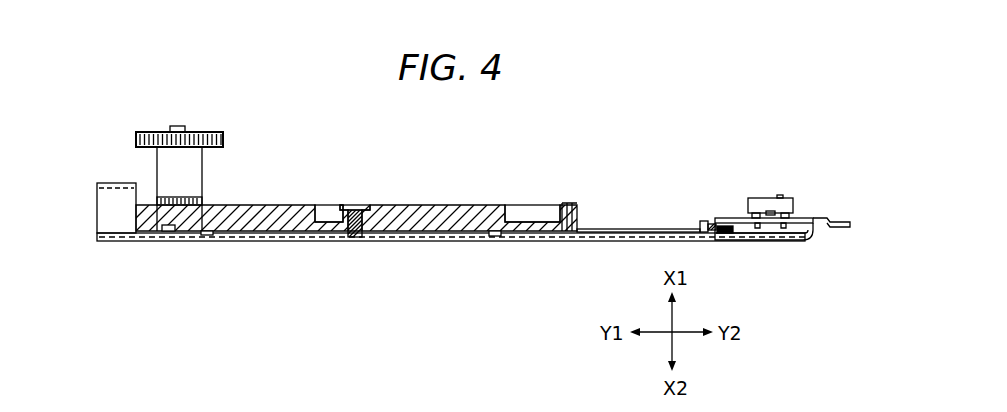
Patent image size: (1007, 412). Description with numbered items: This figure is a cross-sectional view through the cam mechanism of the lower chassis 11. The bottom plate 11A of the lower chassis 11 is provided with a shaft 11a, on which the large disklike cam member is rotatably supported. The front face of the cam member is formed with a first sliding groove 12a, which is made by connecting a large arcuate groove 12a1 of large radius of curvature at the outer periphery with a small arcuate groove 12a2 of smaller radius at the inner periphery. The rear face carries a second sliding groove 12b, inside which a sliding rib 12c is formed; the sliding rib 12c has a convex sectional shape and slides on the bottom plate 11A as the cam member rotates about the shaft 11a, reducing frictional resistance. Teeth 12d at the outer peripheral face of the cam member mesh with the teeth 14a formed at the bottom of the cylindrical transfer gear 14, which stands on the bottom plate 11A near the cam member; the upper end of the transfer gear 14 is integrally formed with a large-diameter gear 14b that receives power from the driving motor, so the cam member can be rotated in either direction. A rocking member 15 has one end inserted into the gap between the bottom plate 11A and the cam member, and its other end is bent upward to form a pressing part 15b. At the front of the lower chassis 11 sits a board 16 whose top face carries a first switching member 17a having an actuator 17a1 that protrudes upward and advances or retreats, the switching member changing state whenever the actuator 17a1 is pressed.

The lower chassis 11 is at (94, 217).
The bottom plate 11A is at (285, 240).
The shaft 11a is at (350, 238).
The first sliding groove 12a is at (493, 146).
The large arcuate groove 12a1 is at (328, 210).
The small arcuate groove 12a2 is at (527, 210).
The second sliding groove 12b is at (170, 240).
The sliding rib 12c is at (207, 240).
The teeth 12d is at (578, 217).
The transfer gear 14 is at (183, 164).
The teeth 14a is at (203, 200).
The large-diameter gear 14b is at (225, 139).
The rocking member 15 is at (643, 230).
The pressing part 15b is at (712, 220).
The board 16 is at (798, 217).
The first switching member 17a is at (790, 205).
The actuator 17a1 is at (778, 195).